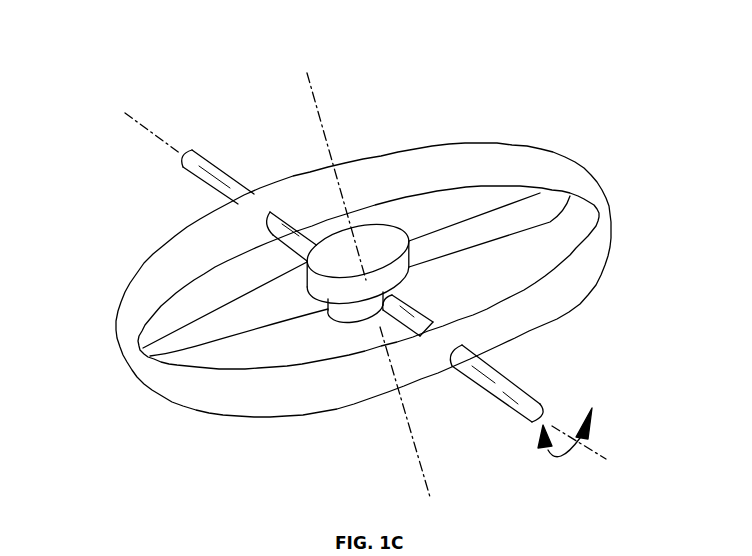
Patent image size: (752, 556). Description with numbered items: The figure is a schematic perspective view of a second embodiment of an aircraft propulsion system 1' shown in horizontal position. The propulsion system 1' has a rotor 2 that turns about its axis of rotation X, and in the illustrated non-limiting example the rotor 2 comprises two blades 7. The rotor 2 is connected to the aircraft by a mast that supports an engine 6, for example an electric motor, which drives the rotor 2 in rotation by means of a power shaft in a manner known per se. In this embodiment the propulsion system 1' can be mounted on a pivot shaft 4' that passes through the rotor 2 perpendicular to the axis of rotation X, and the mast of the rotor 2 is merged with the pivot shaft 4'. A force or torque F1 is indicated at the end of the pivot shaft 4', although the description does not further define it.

The aircraft propulsion system 1' is at (368, 265).
The rotor 2 is at (410, 217).
The blades 7 is at (493, 232).
The engine 6 is at (349, 328).
The pivot shaft 4' is at (361, 286).
The axis of rotation X is at (368, 280).
The force / torque F1 is at (583, 432).